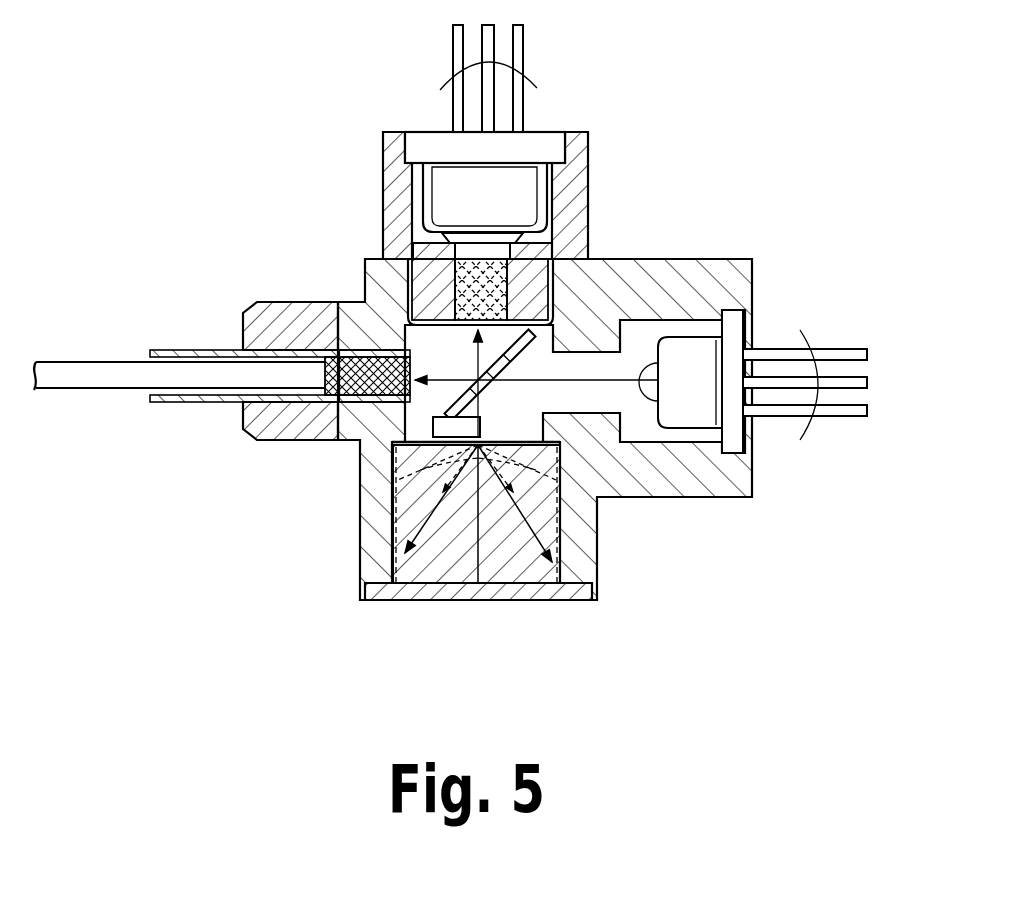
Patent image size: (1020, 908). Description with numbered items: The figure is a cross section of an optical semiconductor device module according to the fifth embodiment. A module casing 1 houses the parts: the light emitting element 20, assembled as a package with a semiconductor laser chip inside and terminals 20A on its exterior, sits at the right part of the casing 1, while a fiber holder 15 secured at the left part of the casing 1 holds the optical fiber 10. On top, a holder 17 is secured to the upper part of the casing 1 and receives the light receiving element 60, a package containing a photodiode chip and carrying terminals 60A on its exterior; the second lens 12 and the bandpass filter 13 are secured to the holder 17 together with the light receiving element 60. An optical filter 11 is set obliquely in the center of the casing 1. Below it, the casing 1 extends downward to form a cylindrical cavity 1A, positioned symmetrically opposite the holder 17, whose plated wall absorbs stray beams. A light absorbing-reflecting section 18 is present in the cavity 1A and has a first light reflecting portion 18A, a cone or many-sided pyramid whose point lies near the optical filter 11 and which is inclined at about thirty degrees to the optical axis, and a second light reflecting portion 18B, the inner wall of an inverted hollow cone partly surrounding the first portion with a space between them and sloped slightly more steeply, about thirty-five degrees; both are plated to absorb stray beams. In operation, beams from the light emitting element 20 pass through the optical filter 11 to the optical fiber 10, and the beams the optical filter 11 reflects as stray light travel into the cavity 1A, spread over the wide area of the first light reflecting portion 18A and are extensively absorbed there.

The module casing 1 is at (735, 258).
The cylindrical cavity 1A is at (630, 500).
The optical fiber 10 is at (77, 358).
The optical filter 11 is at (393, 488).
The second lens 12 is at (363, 303).
The bandpass filter 13 is at (540, 231).
The fiber holder 15 is at (275, 303).
The holder 17 is at (583, 178).
The light absorbing-reflecting section 18 is at (545, 557).
The first light reflecting portion 18A is at (597, 590).
The second light reflecting portion 18B is at (597, 530).
The light emitting element 20 is at (753, 337).
The terminals 20A is at (802, 440).
The light receiving element 60 is at (547, 140).
The terminals 60A is at (537, 82).